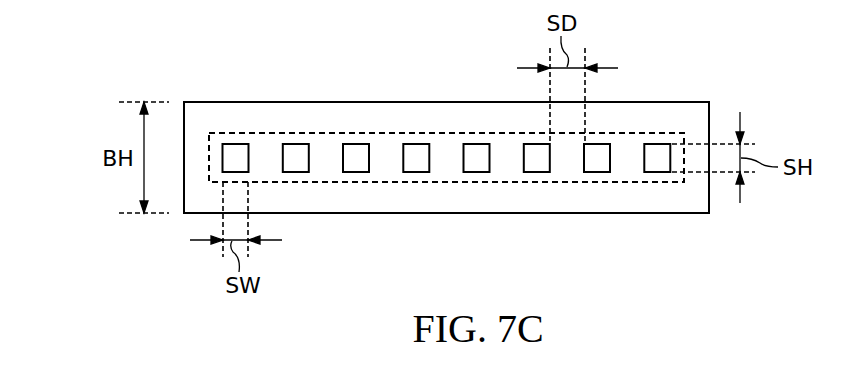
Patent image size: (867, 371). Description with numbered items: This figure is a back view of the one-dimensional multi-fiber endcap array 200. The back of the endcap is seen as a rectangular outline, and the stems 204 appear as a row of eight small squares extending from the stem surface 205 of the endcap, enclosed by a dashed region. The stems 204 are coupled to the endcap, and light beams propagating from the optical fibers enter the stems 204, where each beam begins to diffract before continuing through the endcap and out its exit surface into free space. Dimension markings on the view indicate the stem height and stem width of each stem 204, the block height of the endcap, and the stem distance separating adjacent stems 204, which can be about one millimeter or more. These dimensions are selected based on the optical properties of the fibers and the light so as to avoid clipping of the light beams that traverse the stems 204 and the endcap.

The 1D multi-fiber endcap array 200 is at (370, 140).
The stems 204 is at (347, 182).
The stem surface 205 is at (442, 200).